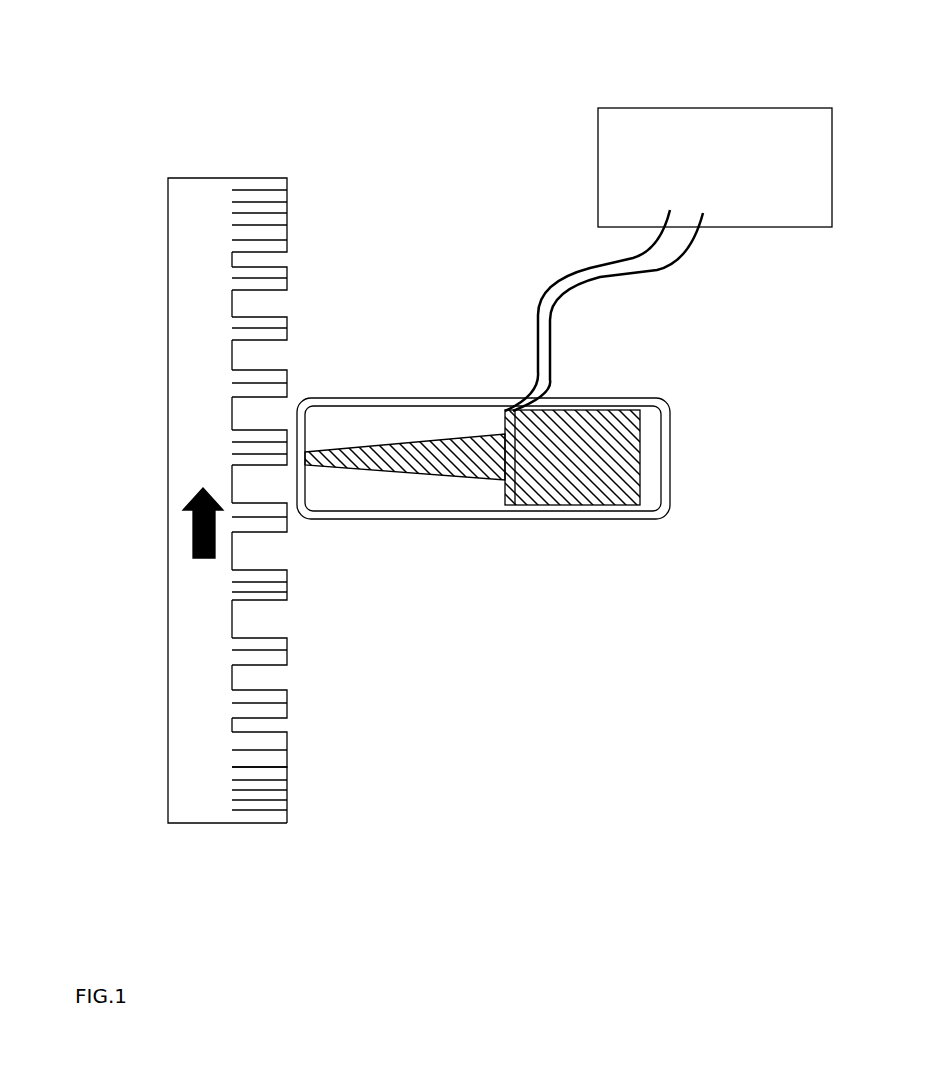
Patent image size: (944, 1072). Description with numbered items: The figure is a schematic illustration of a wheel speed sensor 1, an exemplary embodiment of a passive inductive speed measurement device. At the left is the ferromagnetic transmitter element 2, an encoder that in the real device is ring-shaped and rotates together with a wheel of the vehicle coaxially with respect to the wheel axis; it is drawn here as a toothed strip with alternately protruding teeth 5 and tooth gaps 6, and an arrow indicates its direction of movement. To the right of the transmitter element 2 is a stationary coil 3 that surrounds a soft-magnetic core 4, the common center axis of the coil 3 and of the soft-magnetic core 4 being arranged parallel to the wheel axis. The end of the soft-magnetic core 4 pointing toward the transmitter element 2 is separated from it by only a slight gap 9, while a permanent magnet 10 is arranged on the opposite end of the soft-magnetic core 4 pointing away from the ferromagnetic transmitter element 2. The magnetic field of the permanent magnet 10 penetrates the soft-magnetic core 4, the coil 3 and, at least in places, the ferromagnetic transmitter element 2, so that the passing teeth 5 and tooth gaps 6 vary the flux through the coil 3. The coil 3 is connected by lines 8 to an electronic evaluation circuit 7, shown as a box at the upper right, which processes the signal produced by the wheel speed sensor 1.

The wheel speed sensor 1 is at (383, 138).
The ferromagnetic transmitter element 2 is at (209, 308).
The coil 3 is at (368, 492).
The soft-magnetic core 4 is at (456, 442).
The teeth 5 is at (267, 445).
The tooth gaps 6 is at (267, 488).
The electronic evaluation circuit 7 is at (716, 178).
The lines 8 is at (588, 269).
The gap 9 is at (298, 393).
The permanent magnet 10 is at (574, 464).